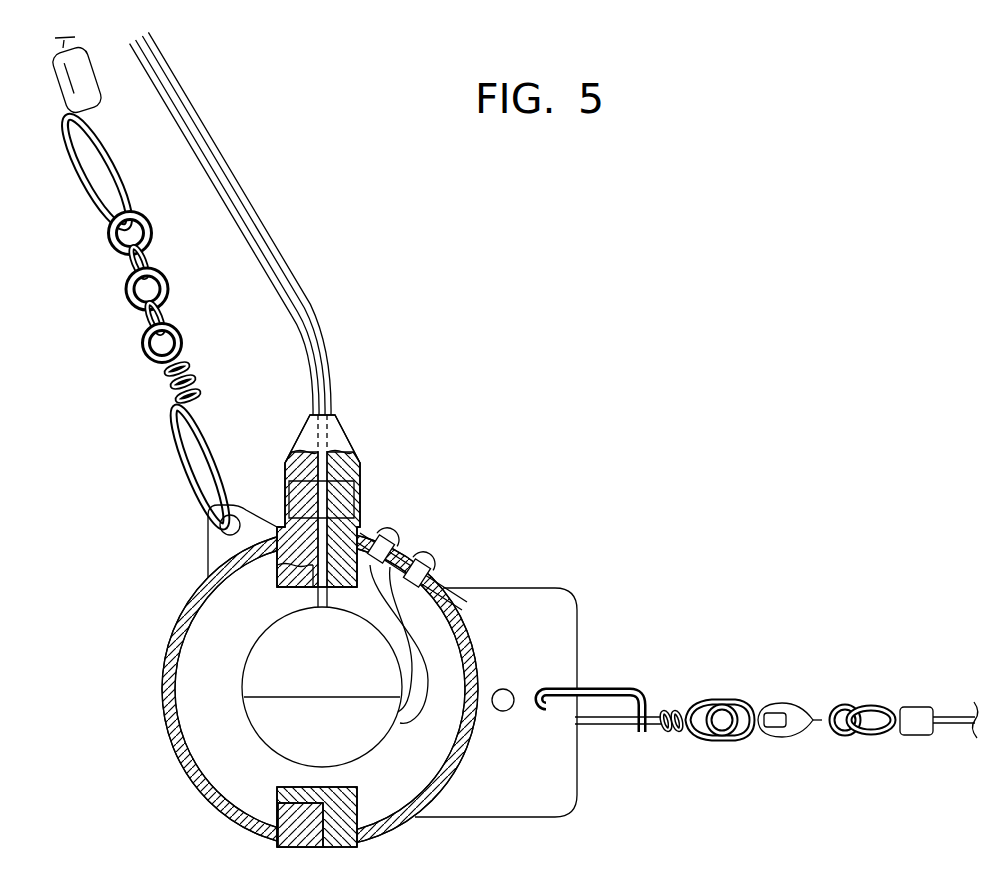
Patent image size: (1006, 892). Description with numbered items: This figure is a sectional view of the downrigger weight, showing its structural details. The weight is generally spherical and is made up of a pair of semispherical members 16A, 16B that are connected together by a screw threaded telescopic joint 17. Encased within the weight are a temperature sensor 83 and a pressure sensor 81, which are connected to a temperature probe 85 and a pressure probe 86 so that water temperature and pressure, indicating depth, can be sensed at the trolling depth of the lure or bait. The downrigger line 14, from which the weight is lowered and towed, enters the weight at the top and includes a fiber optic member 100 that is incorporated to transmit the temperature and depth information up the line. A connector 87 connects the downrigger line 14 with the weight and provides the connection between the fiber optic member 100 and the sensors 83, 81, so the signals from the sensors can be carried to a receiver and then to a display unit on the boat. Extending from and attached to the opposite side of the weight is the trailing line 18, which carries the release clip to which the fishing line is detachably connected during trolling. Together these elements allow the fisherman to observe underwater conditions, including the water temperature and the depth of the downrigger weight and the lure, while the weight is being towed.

The downrigger line 14 is at (262, 213).
The fiber optic member 100 is at (204, 137).
The semispherical member 16A is at (166, 722).
The semispherical member 16B is at (465, 757).
The screw threaded telescopic joint 17 is at (274, 838).
The trailing line 18 is at (958, 718).
The pressure sensor 81 is at (257, 709).
The temperature sensor 83 is at (253, 671).
The temperature probe 85 is at (390, 528).
The pressure probe 86 is at (437, 554).
The connector 87 is at (357, 491).